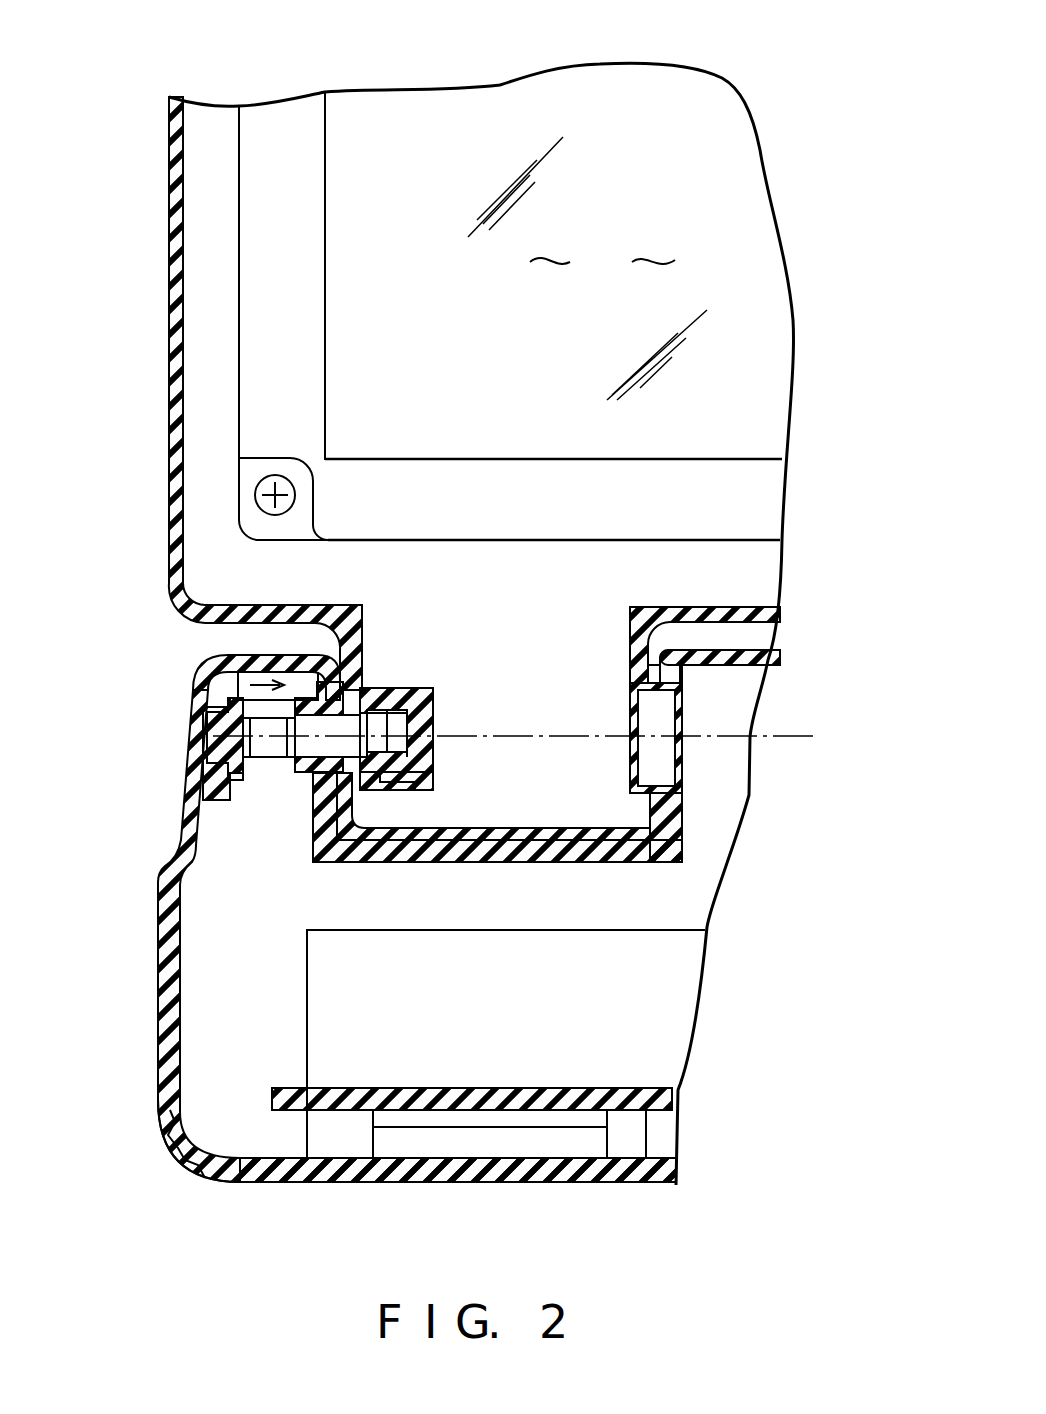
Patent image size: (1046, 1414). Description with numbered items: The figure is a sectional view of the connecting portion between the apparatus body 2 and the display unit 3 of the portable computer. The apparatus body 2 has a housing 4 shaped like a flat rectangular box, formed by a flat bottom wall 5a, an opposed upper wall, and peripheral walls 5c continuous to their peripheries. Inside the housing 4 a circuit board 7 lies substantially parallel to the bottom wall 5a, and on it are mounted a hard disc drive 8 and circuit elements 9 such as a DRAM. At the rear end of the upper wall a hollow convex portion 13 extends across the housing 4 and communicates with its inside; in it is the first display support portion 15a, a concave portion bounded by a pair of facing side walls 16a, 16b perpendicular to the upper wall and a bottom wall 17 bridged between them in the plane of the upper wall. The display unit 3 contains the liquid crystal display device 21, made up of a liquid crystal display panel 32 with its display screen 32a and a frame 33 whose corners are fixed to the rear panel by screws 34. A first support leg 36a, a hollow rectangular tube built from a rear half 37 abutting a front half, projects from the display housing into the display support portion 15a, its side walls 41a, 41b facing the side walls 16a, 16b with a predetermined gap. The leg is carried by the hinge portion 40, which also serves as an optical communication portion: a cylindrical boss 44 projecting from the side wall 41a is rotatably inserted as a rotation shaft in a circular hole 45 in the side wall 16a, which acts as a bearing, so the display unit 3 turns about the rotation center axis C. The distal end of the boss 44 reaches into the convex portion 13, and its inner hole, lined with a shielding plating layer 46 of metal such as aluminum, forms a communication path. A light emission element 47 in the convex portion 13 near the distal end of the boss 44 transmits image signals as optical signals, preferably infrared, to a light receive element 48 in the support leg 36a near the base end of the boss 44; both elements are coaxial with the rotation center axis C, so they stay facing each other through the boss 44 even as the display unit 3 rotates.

The apparatus body 2 is at (163, 1122).
The display unit 3 is at (292, 95).
The housing 4 is at (165, 868).
The bottom wall 5a is at (383, 1183).
The peripheral walls 5c is at (168, 1080).
The circuit board 7 is at (647, 1100).
The hard disc drive 8 is at (668, 986).
The circuit elements 9 is at (527, 1120).
The convex portion 13 is at (245, 783).
The first display support portion 15a is at (603, 838).
The side wall 16a is at (358, 692).
The side wall 16b is at (682, 797).
The bottom wall 17 is at (435, 860).
The liquid crystal display device 21 is at (736, 428).
The liquid crystal display panel 32 is at (492, 104).
The display screen 32a is at (602, 259).
The frame 33 is at (740, 506).
The screws 34 is at (296, 495).
The first support leg 36a is at (562, 618).
The rear half 37 is at (540, 850).
The hinge portion 40 is at (228, 683).
The side wall 41a is at (322, 848).
The side wall 41b is at (660, 670).
The boss 44 is at (312, 750).
The circular hole 45 is at (368, 710).
The plating layer 46 is at (392, 800).
The light emission element 47 is at (262, 760).
The light receive element 48 is at (430, 720).
The rotation center axis C is at (707, 740).